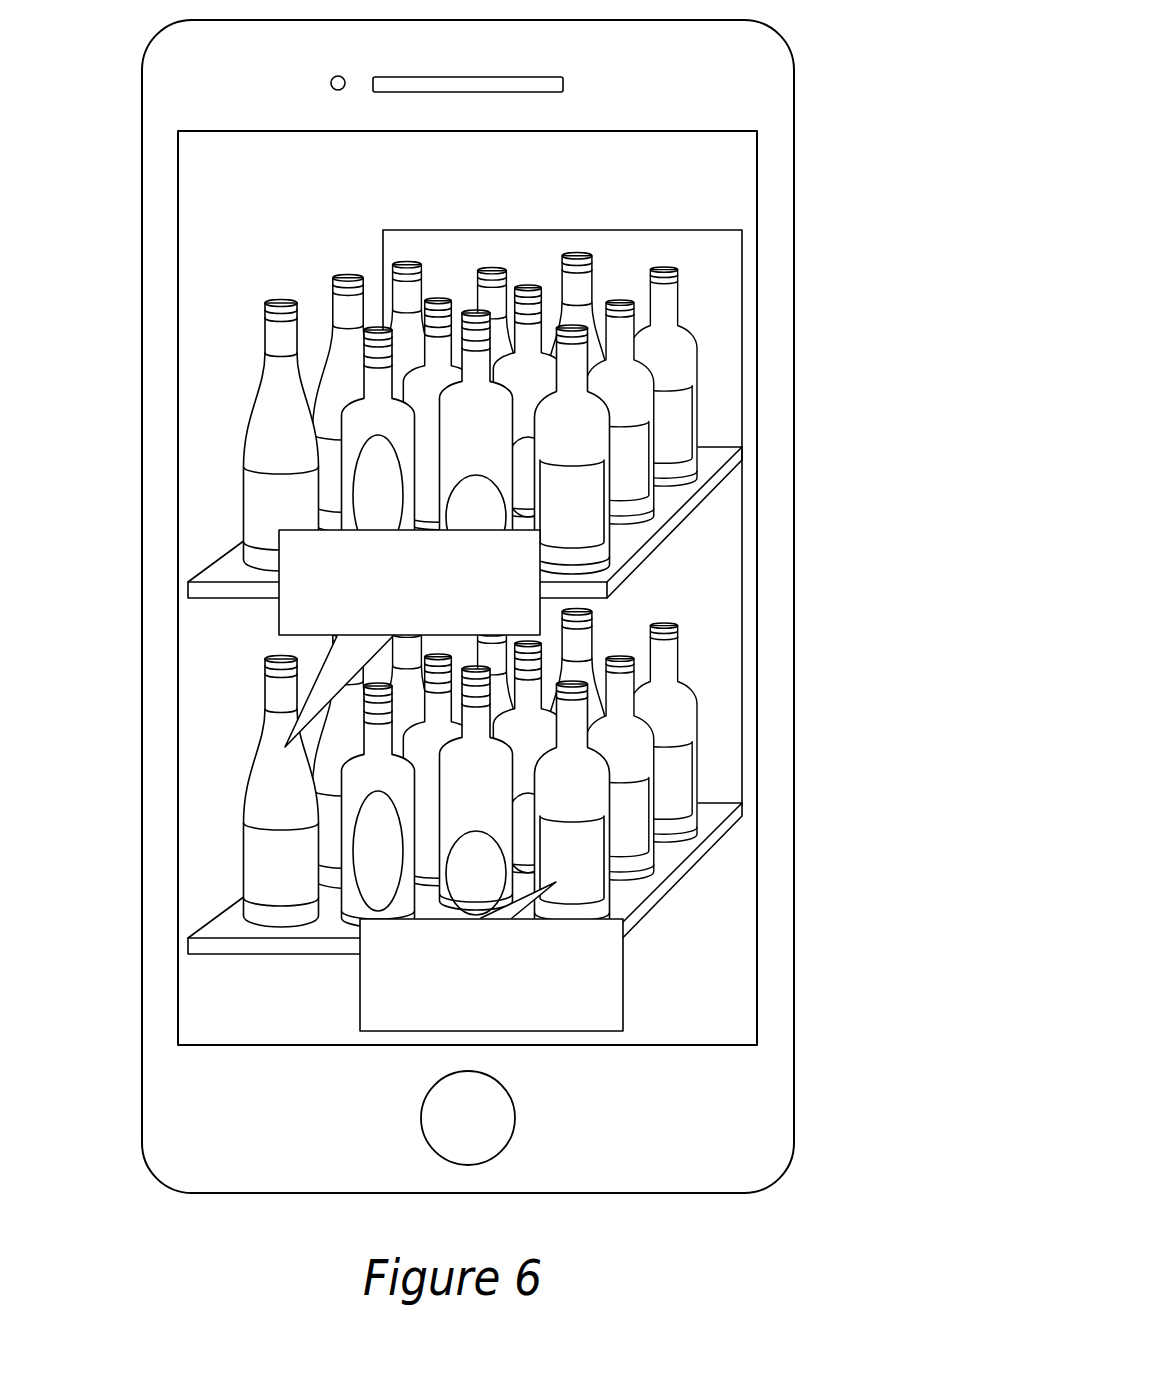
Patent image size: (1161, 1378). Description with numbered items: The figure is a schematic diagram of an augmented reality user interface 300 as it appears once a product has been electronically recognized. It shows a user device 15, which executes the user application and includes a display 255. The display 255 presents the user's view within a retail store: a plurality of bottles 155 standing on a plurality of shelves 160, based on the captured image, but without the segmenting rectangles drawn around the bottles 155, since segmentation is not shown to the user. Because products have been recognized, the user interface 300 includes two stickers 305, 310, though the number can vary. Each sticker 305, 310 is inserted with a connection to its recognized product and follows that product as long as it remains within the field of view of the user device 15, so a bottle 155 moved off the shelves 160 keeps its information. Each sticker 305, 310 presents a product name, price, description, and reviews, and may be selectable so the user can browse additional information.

The user device 15 is at (796, 212).
The bottles 155 is at (275, 422).
The shelves 160 is at (213, 562).
The display 255 is at (220, 130).
The augmented reality user interface 300 is at (846, 88).
The sticker 305 is at (293, 516).
The sticker 310 is at (625, 987).